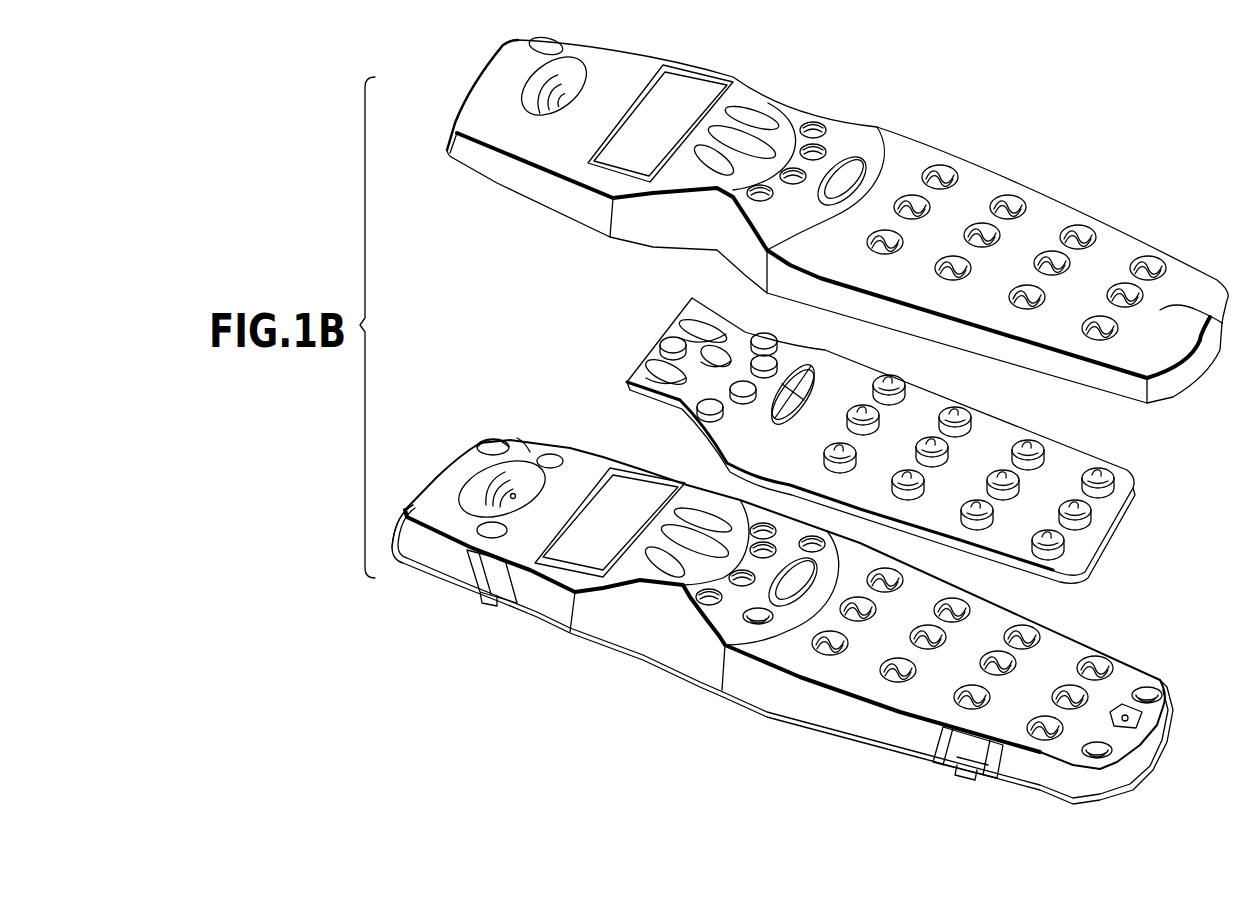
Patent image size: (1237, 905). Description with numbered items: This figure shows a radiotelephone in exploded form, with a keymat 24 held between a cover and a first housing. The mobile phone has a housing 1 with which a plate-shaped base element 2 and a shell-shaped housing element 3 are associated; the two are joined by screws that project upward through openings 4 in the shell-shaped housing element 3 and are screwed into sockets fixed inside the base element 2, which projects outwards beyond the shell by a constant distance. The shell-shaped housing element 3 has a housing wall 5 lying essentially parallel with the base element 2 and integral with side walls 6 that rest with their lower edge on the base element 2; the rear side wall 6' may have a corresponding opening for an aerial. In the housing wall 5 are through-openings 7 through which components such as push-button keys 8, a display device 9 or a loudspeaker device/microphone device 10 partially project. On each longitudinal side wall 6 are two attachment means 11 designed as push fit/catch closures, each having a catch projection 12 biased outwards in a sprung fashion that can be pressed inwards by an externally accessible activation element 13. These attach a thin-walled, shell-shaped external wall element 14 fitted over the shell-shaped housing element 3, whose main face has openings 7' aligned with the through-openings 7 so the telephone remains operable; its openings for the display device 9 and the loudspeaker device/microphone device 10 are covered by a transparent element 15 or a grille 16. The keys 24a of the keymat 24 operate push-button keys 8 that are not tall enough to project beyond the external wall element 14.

The housing 1 is at (603, 708).
The plate-shaped base element 2 is at (643, 660).
The shell-shaped housing element 3 is at (890, 723).
The openings 4 is at (552, 455).
The housing wall 5 is at (923, 715).
The side walls 6 is at (782, 682).
The rear side wall 6' is at (399, 505).
The through-openings 7 is at (612, 561).
The openings 7' is at (803, 135).
The push-button keys 8 is at (493, 440).
The display device 9 is at (567, 560).
The loudspeaker device/microphone device 10 is at (477, 490).
The attachment means 11 is at (480, 618).
The catch projection 12 is at (970, 765).
The activation element 13 is at (957, 777).
The external wall element 14 is at (980, 172).
The transparent element 15 is at (693, 80).
The grille 16 is at (577, 61).
The keymat 24 is at (1130, 508).
The keys 24a is at (838, 458).